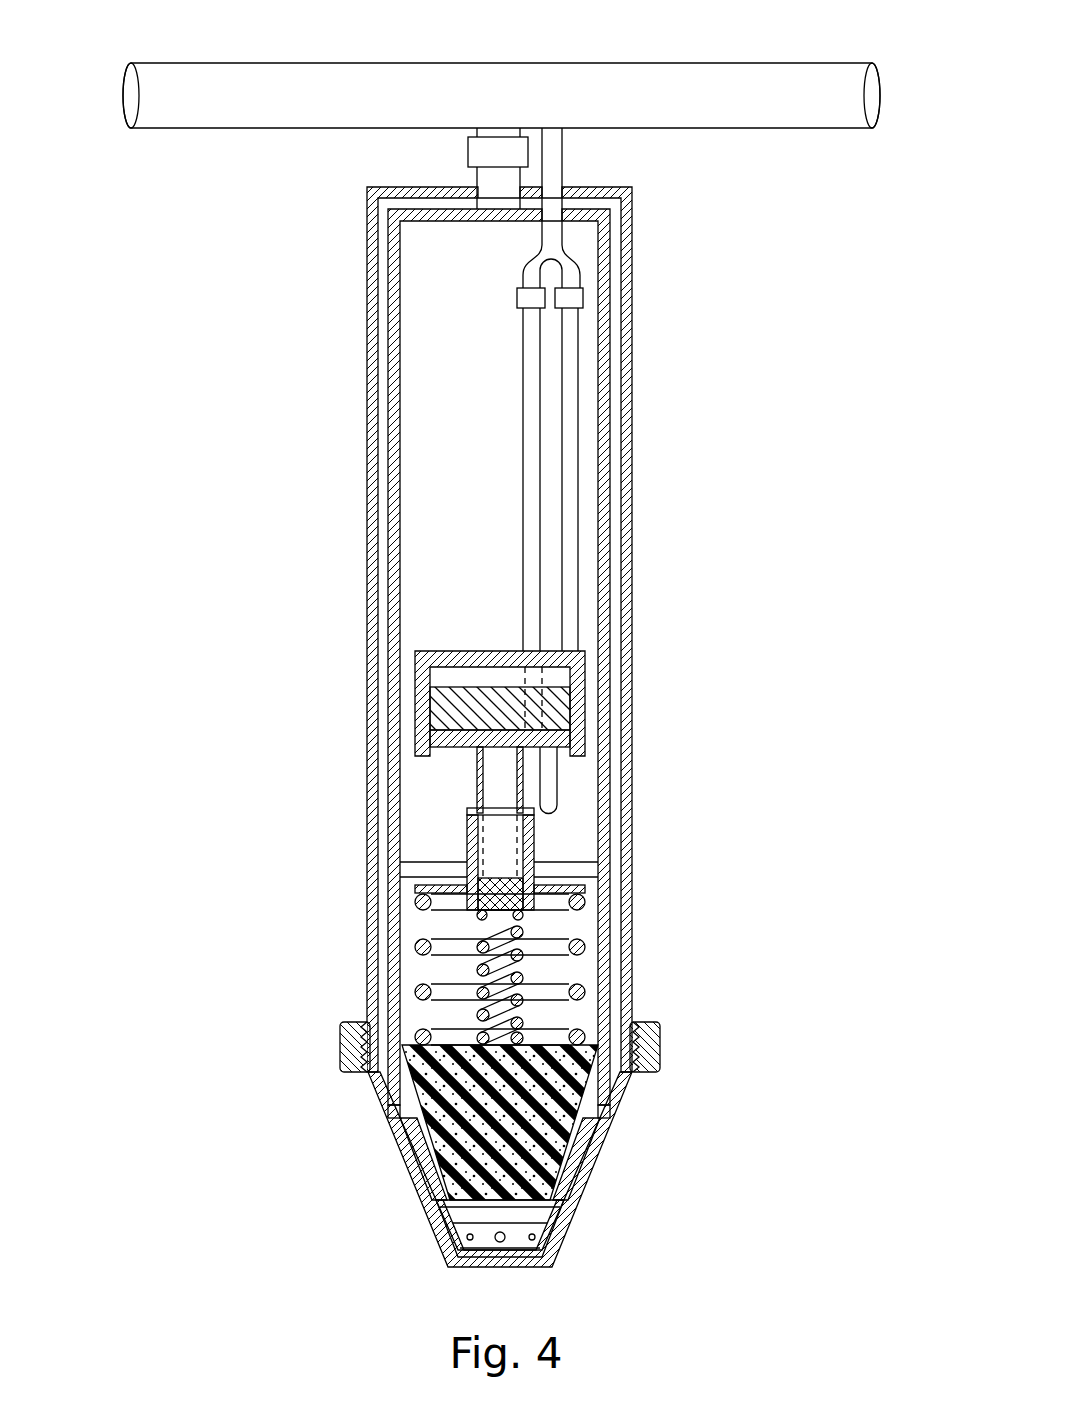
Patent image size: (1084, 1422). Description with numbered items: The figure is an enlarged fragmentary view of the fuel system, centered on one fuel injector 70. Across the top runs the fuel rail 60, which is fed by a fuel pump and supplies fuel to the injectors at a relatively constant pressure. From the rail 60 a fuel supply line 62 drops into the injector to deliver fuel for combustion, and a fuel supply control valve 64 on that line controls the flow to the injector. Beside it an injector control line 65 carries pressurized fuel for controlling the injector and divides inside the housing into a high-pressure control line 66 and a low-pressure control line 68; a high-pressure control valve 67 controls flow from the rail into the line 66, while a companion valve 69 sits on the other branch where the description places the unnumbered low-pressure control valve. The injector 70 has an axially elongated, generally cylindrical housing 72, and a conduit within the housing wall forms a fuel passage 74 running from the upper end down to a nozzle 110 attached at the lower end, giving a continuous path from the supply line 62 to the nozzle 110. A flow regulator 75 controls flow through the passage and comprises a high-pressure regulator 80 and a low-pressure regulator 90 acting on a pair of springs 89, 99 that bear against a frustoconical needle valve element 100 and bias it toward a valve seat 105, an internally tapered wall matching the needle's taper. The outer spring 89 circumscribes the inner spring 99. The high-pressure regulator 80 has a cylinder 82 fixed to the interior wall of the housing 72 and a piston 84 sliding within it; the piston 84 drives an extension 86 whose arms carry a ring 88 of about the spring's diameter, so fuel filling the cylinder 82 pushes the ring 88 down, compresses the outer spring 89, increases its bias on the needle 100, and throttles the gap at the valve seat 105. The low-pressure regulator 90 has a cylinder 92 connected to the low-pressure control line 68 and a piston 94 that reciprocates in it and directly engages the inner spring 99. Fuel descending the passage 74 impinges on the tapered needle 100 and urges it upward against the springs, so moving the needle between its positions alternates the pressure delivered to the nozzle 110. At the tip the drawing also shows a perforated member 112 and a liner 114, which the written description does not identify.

The fuel rail 60 is at (633, 110).
The fuel supply line 62 is at (477, 178).
The fuel supply control valve 64 is at (468, 153).
The injector control line 65 is at (560, 153).
The high-pressure control line 66 is at (527, 440).
The high-pressure control valve 67 is at (517, 297).
The low-pressure control line 68 is at (575, 420).
The connector 69 is at (583, 297).
The injector 70 is at (650, 233).
The housing 72 is at (367, 252).
The fuel passage 74 is at (390, 360).
The flow regulator 75 is at (440, 635).
The high-pressure regulator 80 is at (586, 658).
The cylinder 82 is at (582, 744).
The piston 84 is at (445, 702).
The extension 86 is at (478, 775).
The ring 88 is at (585, 887).
The outer spring 89 is at (585, 990).
The low-pressure regulator 90 is at (455, 825).
The cylinder 92 is at (535, 855).
The piston 94 is at (476, 918).
The inner spring 99 is at (478, 975).
The needle valve element 100 is at (432, 1162).
The valve seat 105 is at (410, 1138).
The nozzle 110 is at (572, 1244).
The plate with holes 112 is at (492, 1247).
The liner cup 114 is at (568, 1225).